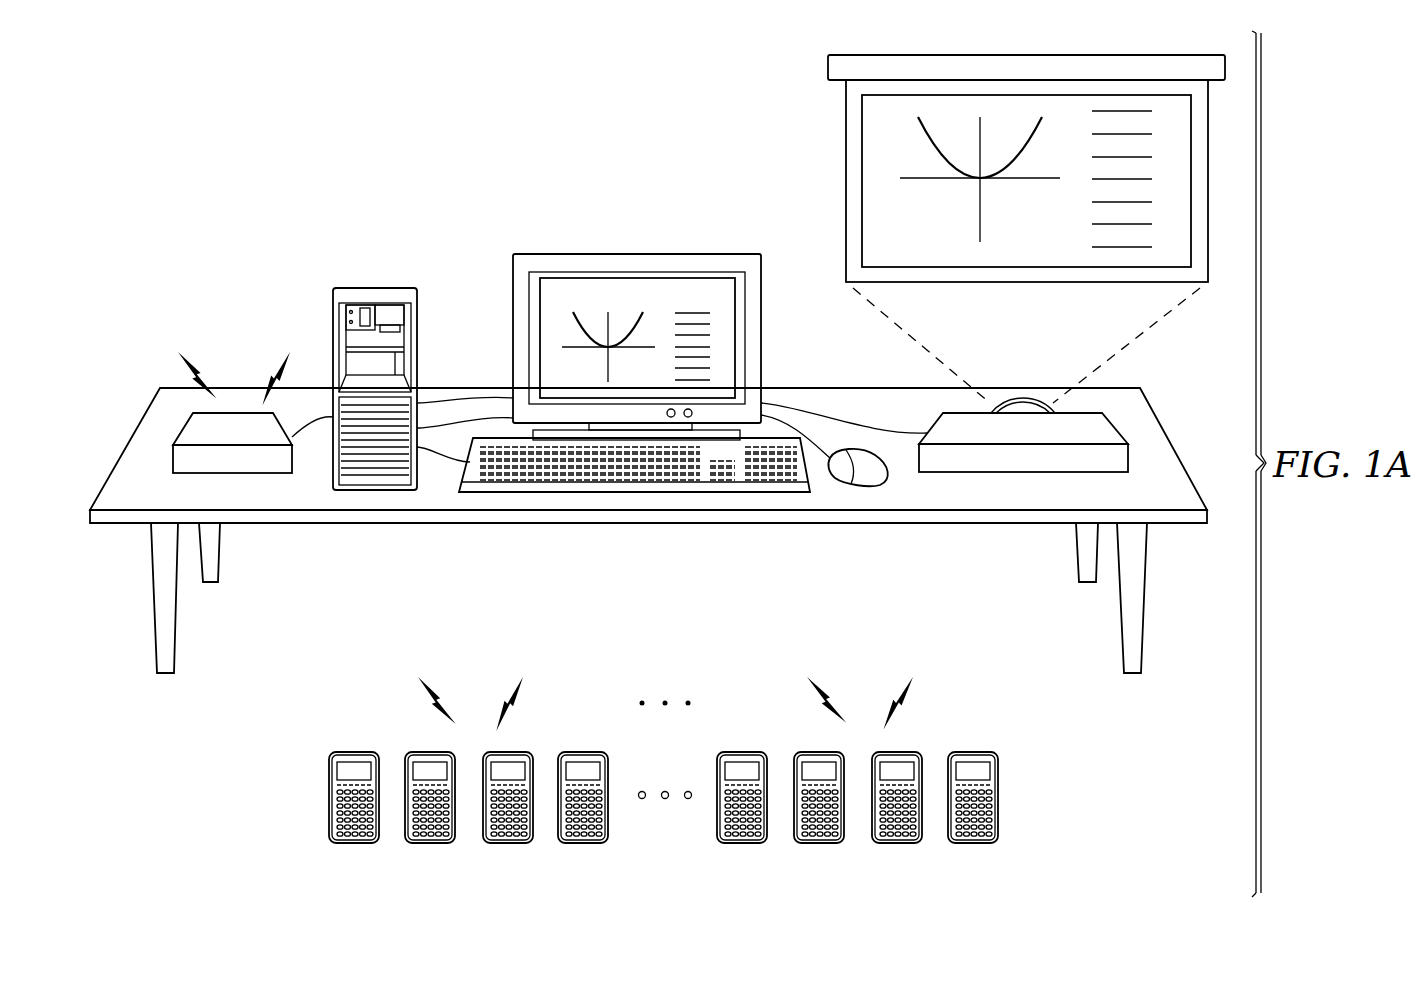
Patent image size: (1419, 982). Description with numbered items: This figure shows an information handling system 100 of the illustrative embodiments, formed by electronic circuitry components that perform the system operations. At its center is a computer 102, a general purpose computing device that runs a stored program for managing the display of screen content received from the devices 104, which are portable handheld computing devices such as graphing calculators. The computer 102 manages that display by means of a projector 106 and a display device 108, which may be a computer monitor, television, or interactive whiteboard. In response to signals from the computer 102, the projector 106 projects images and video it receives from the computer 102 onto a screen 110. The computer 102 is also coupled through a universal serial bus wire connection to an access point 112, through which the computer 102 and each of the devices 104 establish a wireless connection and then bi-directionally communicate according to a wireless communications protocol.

The information handling system 100 is at (428, 182).
The computer 102 is at (360, 288).
The devices 104 is at (354, 843).
The projector 106 is at (1128, 458).
The display device 108 is at (658, 254).
The screen 110 is at (846, 180).
The access point 112 is at (173, 458).